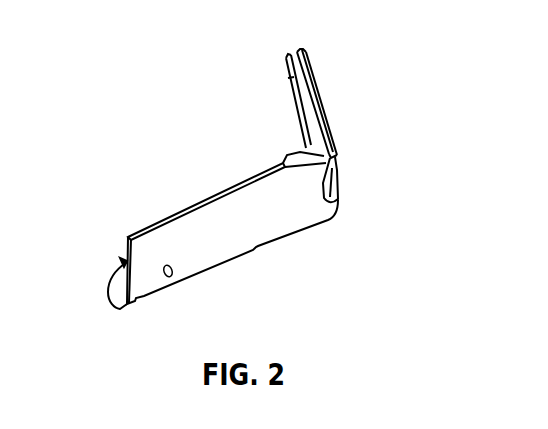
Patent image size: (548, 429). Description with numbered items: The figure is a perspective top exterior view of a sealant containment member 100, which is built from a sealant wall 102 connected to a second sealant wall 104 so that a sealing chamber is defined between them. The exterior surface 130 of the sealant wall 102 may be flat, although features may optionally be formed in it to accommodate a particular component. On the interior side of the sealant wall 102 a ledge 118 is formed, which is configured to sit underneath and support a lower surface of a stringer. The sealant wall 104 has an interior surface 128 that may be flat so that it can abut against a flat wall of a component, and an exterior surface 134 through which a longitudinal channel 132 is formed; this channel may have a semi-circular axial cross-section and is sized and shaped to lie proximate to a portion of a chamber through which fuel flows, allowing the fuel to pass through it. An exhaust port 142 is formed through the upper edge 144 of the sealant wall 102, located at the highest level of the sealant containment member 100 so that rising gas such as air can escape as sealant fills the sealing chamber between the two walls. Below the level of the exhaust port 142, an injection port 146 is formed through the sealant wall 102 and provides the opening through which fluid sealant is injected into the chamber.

The sealant containment member 100 is at (122, 98).
The sealant wall 102 is at (172, 215).
The sealant wall 104 is at (310, 82).
The ledge 118 is at (124, 258).
The interior surface 128 is at (295, 110).
The exterior surface 130 is at (148, 268).
The longitudinal channel 132 is at (335, 185).
The exterior surface 134 is at (332, 140).
The exhaust port 142 is at (303, 139).
The upper edge 144 is at (232, 190).
The injection port 146 is at (172, 278).